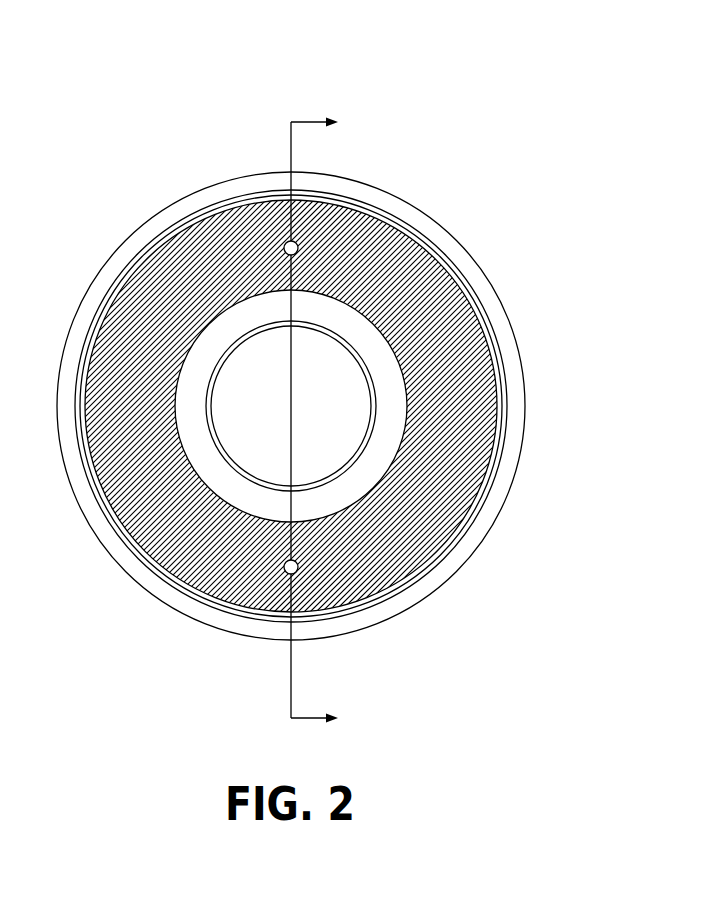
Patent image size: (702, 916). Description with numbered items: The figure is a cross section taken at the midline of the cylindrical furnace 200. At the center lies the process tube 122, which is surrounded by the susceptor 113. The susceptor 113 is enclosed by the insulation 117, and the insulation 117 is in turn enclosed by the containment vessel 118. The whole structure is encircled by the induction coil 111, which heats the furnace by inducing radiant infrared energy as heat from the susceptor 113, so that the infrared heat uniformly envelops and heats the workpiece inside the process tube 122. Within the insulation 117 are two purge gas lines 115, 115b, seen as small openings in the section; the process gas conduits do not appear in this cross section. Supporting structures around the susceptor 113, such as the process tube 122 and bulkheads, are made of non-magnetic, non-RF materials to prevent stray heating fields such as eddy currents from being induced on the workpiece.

The furnace 200 is at (321, 72).
The induction coil 111 is at (455, 567).
The susceptor 113 is at (200, 460).
The purge gas line 115 is at (283, 247).
The purge gas line 115b is at (298, 568).
The insulation 117 is at (490, 433).
The containment vessel 118 is at (473, 502).
The process tube 122 is at (390, 347).